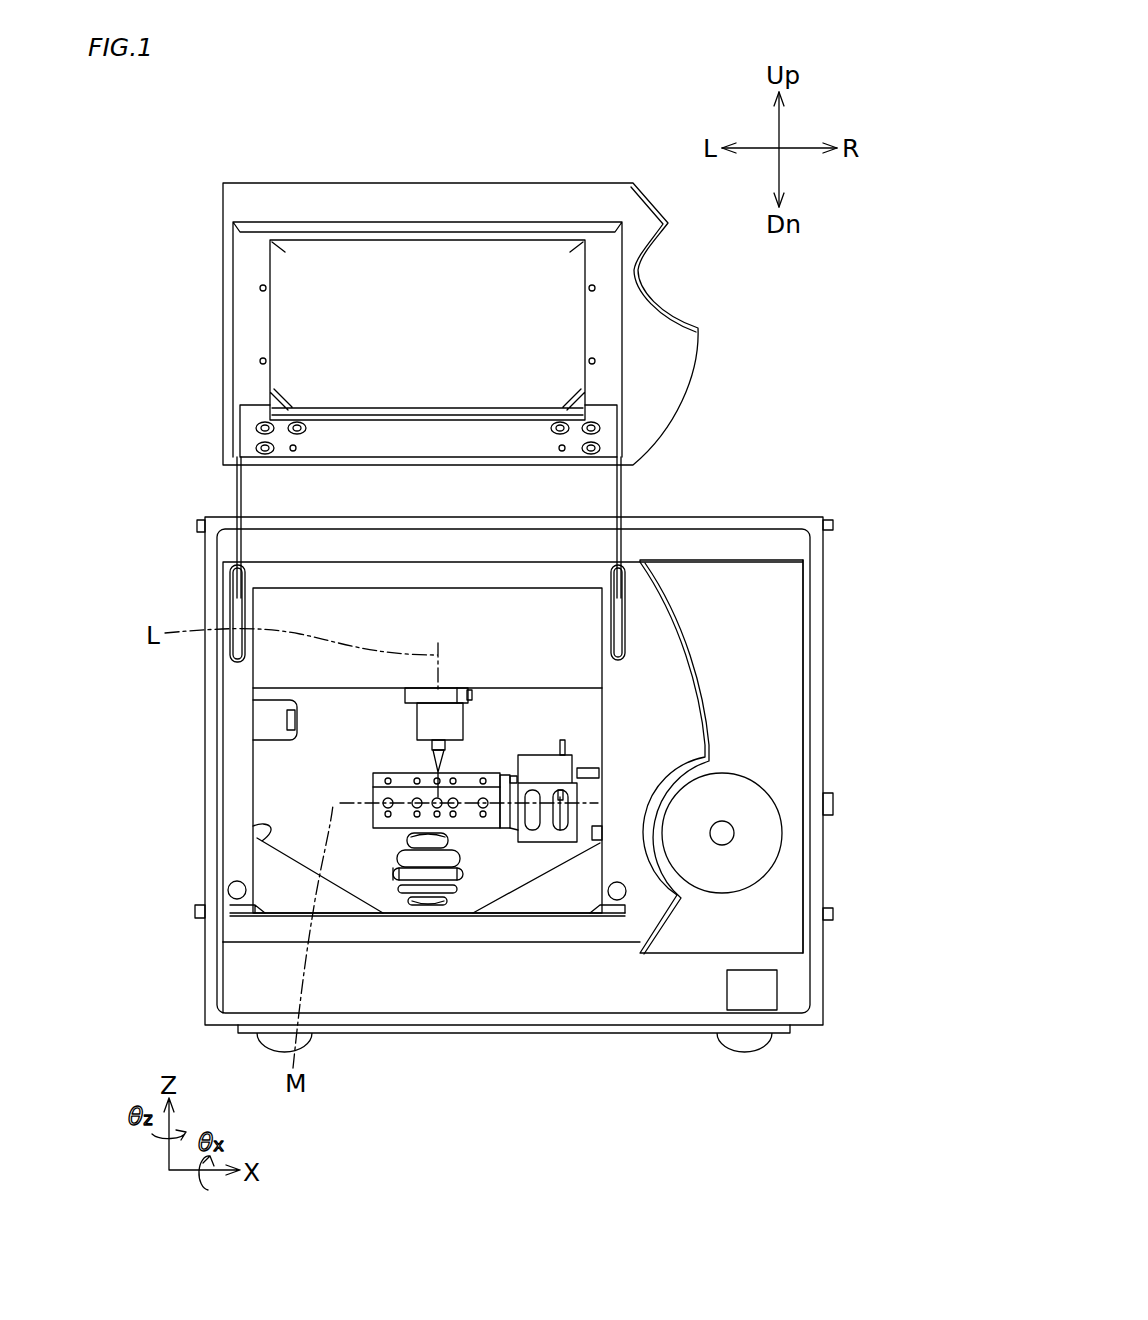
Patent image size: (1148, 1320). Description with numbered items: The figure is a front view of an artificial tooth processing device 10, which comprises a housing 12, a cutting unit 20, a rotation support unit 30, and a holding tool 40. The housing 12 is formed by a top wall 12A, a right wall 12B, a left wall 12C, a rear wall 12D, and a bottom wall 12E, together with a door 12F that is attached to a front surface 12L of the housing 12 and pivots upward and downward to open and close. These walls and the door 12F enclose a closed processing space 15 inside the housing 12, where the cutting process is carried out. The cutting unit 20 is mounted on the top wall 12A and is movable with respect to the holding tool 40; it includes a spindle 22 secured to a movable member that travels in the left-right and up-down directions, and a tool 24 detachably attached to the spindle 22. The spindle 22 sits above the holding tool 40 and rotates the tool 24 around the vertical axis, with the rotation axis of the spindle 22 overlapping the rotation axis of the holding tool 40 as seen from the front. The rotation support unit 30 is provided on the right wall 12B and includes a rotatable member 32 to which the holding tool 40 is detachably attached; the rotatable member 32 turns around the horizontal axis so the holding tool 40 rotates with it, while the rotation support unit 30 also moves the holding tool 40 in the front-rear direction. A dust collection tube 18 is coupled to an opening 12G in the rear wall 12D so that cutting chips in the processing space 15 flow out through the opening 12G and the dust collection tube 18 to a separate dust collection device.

The artificial tooth processing device 10 is at (787, 404).
The housing 12 is at (836, 847).
The top wall 12A is at (318, 667).
The right wall 12B is at (637, 737).
The left wall 12C is at (237, 750).
The rear wall 12D is at (300, 838).
The bottom wall 12E is at (327, 928).
The door 12F is at (443, 198).
The opening 12G is at (460, 865).
The front surface 12L is at (212, 570).
The processing space 15 is at (257, 838).
The dust collection tube 18 is at (437, 873).
The cutting unit 20 is at (490, 724).
The spindle 22 is at (420, 718).
The tool 24 is at (433, 753).
The rotation support unit 30 is at (553, 863).
The rotatable member 32 is at (515, 830).
The holding tool 40 is at (389, 840).